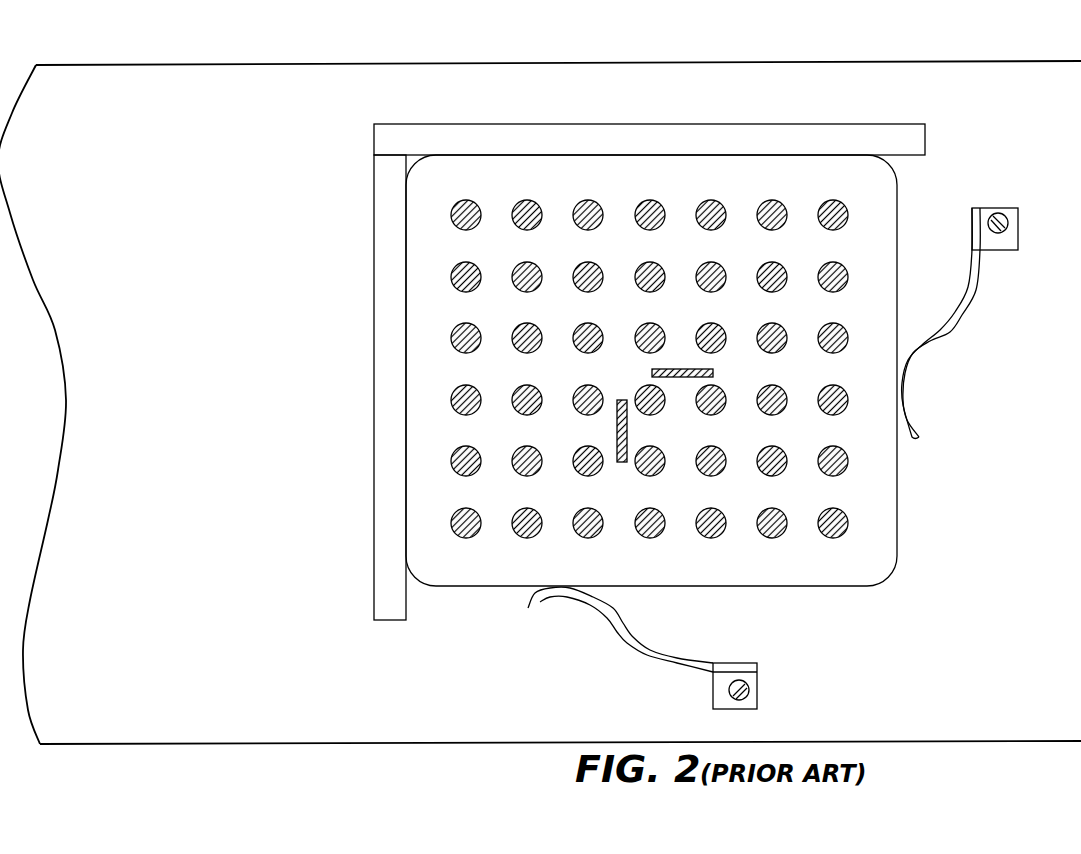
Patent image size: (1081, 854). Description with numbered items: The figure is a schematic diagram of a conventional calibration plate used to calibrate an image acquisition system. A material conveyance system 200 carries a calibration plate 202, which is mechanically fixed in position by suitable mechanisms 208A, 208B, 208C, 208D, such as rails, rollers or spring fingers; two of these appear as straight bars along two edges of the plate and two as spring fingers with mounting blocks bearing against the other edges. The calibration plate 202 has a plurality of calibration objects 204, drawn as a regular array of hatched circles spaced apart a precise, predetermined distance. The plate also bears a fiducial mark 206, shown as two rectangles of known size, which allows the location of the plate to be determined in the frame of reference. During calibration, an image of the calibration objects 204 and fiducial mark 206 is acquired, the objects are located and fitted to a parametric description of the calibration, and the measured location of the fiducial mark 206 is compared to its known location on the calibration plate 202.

The material conveyance system 200 is at (818, 77).
The calibration plate 202 is at (867, 553).
The calibration objects 204 is at (521, 208).
The fiducial mark 206 is at (650, 374).
The fixing mechanism 208A is at (375, 386).
The fixing mechanism 208B is at (620, 138).
The fixing mechanism 208C is at (636, 650).
The fixing mechanism 208D is at (960, 307).